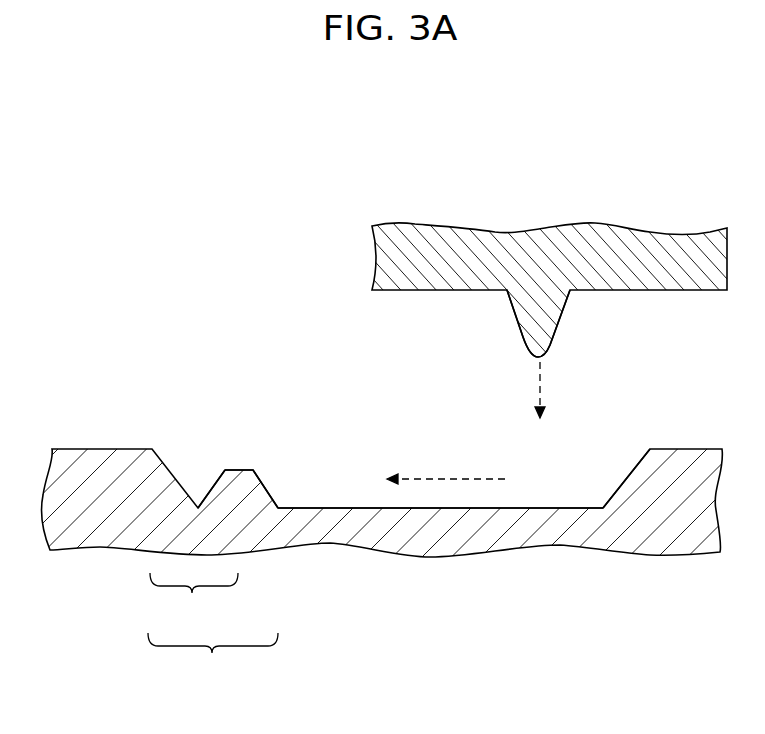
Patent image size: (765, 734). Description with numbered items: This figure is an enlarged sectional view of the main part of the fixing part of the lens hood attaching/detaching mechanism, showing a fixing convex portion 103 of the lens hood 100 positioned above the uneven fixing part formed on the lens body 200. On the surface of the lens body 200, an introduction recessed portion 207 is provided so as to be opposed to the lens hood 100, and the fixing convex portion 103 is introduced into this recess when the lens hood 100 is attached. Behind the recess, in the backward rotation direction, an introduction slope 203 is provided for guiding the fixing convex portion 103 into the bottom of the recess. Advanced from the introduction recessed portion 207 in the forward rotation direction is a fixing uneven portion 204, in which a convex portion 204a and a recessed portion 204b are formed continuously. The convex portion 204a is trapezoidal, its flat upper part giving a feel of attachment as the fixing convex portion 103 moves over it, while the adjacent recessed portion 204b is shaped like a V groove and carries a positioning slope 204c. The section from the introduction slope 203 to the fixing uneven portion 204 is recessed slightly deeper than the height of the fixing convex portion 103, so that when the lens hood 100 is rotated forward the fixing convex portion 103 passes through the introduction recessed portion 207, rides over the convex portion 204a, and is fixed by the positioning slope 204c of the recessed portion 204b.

The lens hood 100 is at (593, 197).
The fixing convex portion 103 is at (550, 322).
The lens body 200 is at (597, 582).
The introduction slope 203 is at (625, 478).
The introduction recessed portion 207 is at (572, 507).
The fixing uneven portion 204 is at (213, 658).
The convex portion 204a is at (242, 470).
The recessed portion 204b is at (194, 600).
The positioning slope 204c is at (214, 480).